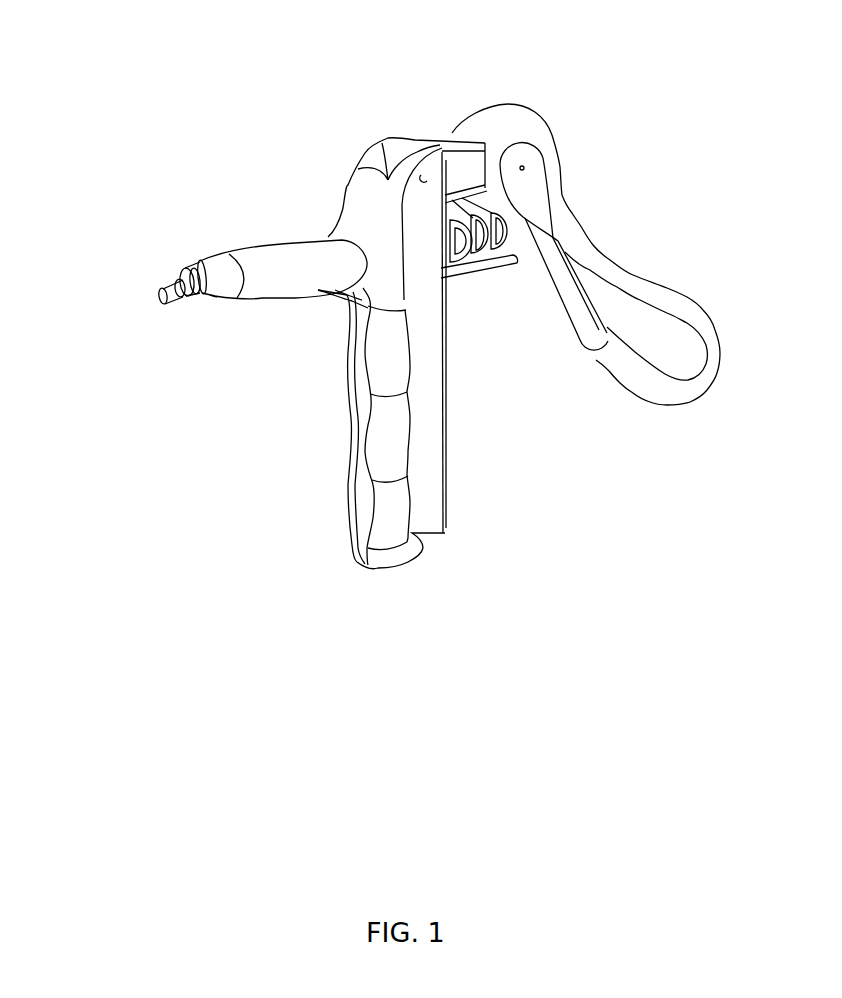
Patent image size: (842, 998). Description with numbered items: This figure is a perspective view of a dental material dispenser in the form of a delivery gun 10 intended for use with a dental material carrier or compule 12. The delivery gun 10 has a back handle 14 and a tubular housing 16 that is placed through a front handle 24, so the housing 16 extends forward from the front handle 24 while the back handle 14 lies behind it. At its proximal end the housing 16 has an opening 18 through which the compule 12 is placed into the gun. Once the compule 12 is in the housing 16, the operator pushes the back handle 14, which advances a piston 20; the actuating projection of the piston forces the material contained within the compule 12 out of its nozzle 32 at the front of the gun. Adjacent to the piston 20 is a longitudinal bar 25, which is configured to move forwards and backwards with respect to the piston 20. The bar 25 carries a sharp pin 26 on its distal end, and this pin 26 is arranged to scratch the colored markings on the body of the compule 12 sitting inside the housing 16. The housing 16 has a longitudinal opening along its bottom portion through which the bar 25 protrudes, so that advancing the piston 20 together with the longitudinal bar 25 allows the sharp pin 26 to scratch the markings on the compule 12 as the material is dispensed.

The delivery gun 10 is at (562, 95).
The compule 12 is at (183, 270).
The back handle 14 is at (680, 293).
The tubular housing 16 is at (272, 248).
The opening 18 is at (220, 298).
The piston 20 is at (478, 262).
The front handle 24 is at (358, 490).
The longitudinal bar 25 is at (519, 270).
The sharp pin 26 is at (325, 288).
The nozzle 32 is at (157, 297).